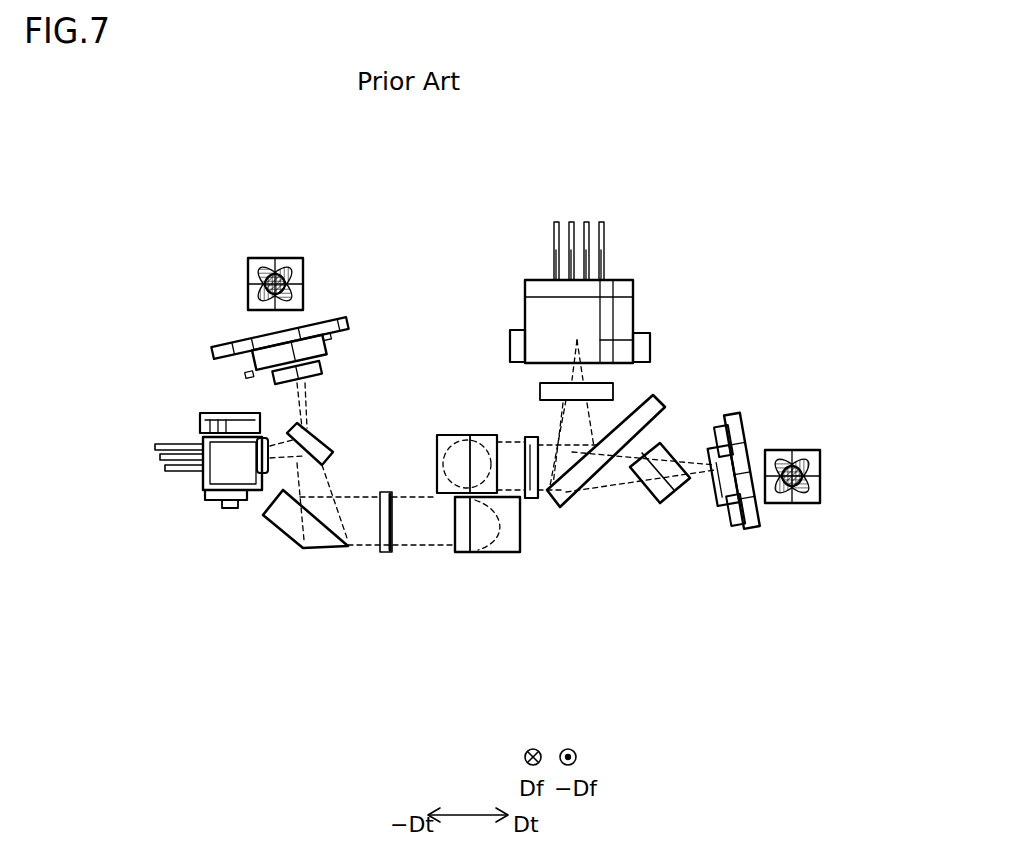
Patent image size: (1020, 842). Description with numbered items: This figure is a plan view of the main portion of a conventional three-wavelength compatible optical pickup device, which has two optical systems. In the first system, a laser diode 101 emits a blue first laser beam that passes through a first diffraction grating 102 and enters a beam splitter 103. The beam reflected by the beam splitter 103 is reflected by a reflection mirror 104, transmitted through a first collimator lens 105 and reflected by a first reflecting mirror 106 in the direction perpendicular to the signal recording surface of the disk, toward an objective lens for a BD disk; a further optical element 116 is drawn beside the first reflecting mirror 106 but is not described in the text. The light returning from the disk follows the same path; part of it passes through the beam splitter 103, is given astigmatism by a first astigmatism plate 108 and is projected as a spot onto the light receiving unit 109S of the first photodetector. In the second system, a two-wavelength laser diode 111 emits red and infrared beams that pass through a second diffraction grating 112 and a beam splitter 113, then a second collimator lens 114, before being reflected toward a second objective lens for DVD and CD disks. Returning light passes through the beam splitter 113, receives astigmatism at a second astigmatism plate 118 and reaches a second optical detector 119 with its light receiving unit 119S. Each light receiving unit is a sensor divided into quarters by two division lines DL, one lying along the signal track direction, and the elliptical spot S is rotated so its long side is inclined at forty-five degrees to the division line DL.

The laser diode 101 is at (220, 498).
The first diffraction grating 102 is at (248, 505).
The beam splitter 103 is at (330, 440).
The reflection mirror 104 is at (302, 542).
The first collimator lens 105 is at (388, 553).
The first reflecting mirror 106 is at (510, 554).
The lens 116 is at (455, 437).
The second collimator lens 114 is at (535, 500).
The beam splitter 113 is at (587, 495).
The second astigmatism plate 118 is at (658, 505).
The second optical detector 119 is at (712, 505).
The light receiving unit 119S is at (820, 460).
The first astigmatism plate 108 is at (322, 375).
The light receiving unit 109S is at (524, 387).
The two-wavelength laser diode 111 is at (605, 318).
The second diffraction grating 112 is at (615, 390).
The division line DL is at (272, 260).
The elliptical spot S is at (262, 305).